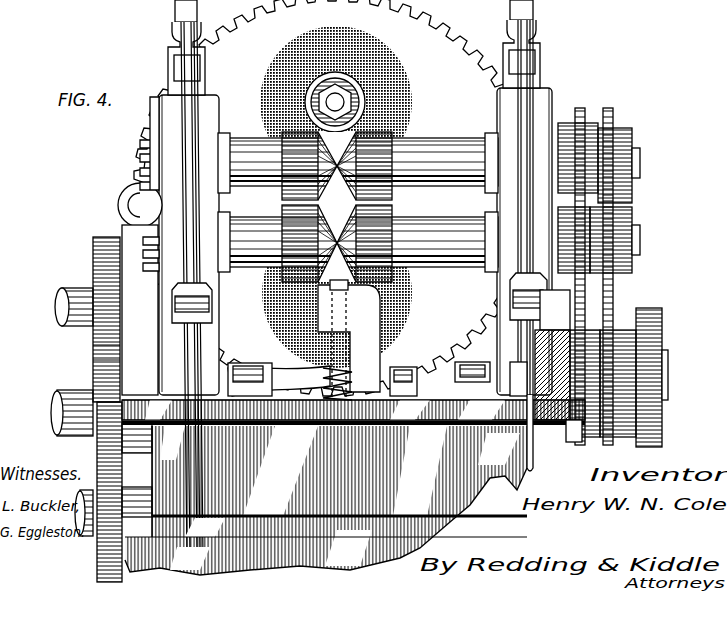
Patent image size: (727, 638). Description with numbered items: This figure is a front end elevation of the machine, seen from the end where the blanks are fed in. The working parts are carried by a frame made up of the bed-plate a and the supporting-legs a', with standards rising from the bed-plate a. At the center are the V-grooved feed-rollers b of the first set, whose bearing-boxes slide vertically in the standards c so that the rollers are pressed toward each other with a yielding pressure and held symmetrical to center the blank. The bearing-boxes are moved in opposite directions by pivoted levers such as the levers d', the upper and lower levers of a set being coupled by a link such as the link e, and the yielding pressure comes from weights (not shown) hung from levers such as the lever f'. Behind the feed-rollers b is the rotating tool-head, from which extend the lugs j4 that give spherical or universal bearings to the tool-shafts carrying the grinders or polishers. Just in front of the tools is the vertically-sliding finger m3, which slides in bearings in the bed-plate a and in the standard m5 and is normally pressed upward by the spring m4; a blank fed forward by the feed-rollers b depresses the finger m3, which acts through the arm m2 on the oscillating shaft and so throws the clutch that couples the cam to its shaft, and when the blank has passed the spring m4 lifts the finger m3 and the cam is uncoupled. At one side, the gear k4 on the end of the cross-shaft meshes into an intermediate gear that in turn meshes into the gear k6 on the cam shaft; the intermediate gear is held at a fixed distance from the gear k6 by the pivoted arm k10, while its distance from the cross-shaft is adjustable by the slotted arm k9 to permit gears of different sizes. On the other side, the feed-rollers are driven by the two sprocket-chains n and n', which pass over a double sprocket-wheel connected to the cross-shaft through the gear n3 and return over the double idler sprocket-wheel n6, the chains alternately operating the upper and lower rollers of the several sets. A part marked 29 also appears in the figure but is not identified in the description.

The bed-plate a is at (353, 487).
The supporting-legs a' is at (326, 544).
The V-grooved feed-rollers b is at (445, 152).
The standards c is at (160, 103).
The levers d' is at (354, 47).
The link e is at (182, 289).
The lever f' is at (360, 422).
The lugs j4 is at (404, 86).
The gear k4 is at (112, 582).
The gear k6 is at (93, 263).
The slotted arm k9 is at (101, 463).
The pivoted arm k10 is at (93, 358).
The arm m2 is at (282, 370).
The vertically-sliding finger m3 is at (335, 141).
The spring m4 is at (356, 389).
The standard m5 is at (349, 340).
The sprocket-chain n is at (585, 272).
The sprocket-chain n' is at (615, 185).
The gear n3 is at (645, 314).
The double idler sprocket-wheel n6 is at (575, 442).
The plate 29 is at (140, 246).